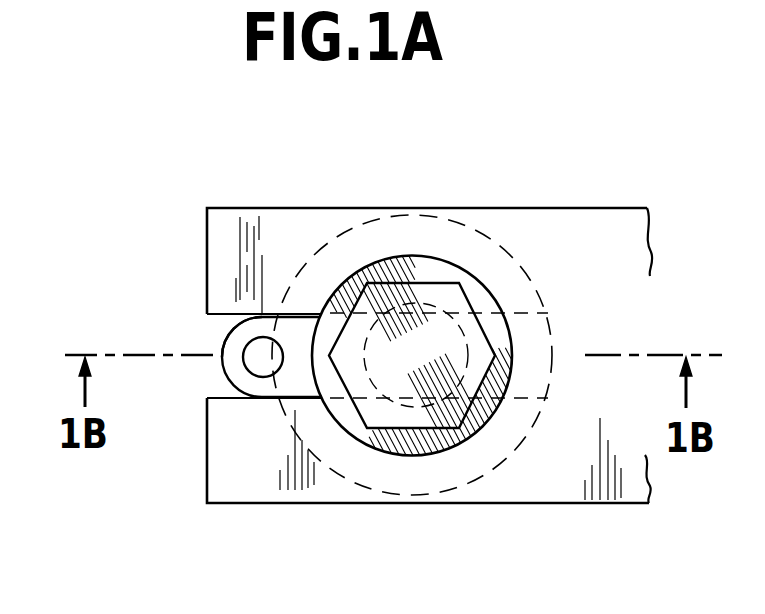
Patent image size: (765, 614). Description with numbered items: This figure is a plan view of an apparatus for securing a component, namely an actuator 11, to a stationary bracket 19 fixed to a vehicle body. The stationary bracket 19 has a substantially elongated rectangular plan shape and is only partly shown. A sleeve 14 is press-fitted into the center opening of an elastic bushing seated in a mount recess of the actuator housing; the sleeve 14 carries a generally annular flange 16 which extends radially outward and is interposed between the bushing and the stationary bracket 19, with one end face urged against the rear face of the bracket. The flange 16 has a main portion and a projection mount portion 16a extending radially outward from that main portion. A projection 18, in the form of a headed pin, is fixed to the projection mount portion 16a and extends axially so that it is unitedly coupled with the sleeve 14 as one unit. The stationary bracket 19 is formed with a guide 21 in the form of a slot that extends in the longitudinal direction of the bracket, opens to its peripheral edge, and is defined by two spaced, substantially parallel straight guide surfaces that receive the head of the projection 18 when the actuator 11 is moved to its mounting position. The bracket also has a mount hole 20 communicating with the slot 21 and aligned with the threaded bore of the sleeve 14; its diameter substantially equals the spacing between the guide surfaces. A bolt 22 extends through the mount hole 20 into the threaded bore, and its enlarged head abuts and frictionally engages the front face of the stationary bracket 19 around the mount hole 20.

The actuator 11 is at (179, 176).
The sleeve 14 is at (223, 323).
The flange 16 is at (497, 240).
The projection mount portion 16a is at (228, 376).
The projection 18 is at (243, 349).
The stationary bracket 19 is at (582, 207).
The mount hole 20 is at (487, 418).
The guide 21 is at (297, 325).
The bolt 22 is at (420, 258).